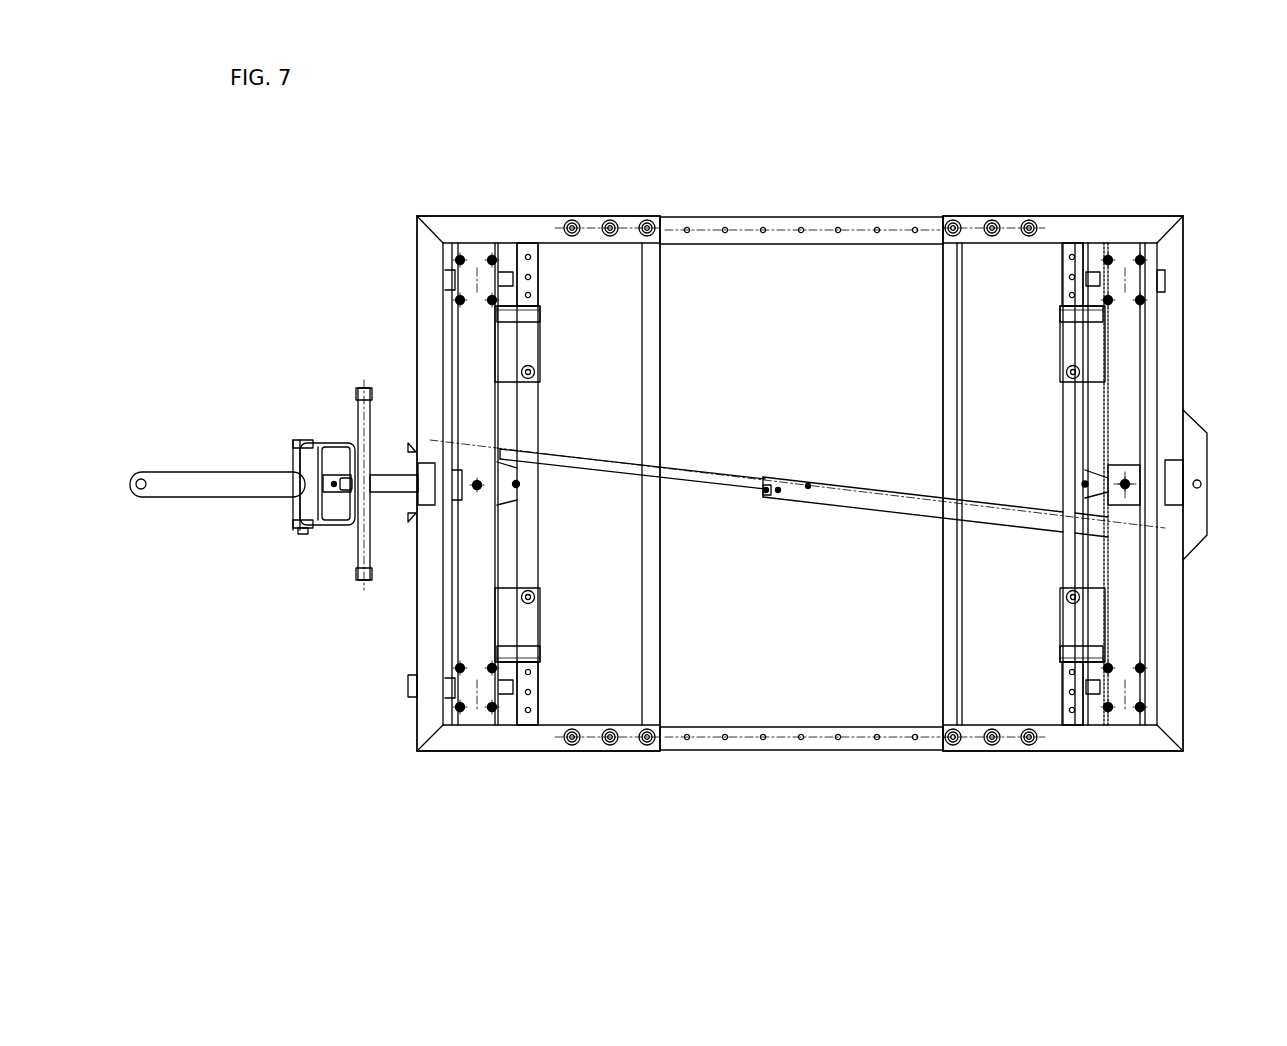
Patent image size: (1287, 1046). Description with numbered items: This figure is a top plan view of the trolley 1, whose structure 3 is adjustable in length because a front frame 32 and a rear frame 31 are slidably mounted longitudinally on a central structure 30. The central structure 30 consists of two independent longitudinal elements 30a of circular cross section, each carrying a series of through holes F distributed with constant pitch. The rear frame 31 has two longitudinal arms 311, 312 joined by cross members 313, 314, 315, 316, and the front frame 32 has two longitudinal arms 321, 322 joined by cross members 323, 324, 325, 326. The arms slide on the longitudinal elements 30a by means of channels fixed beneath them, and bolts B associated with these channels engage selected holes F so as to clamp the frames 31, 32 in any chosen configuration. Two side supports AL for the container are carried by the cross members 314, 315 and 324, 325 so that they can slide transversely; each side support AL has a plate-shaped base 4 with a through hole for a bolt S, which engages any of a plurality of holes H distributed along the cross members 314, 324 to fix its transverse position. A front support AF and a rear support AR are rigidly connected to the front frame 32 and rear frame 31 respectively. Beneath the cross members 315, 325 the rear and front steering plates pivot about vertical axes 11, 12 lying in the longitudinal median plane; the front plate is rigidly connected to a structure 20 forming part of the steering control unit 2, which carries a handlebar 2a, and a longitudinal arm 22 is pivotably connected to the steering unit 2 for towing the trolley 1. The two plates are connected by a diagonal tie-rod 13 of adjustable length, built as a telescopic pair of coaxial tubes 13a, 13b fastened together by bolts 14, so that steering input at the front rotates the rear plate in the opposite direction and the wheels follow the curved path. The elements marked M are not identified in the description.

The trolley 1 is at (958, 178).
The steering control unit 2 is at (248, 444).
The handlebar 2a is at (355, 556).
The structure 3 is at (394, 241).
The base 4 is at (525, 344).
The vertical axis 11 is at (1125, 468).
The vertical axis 12 is at (479, 492).
The diagonal tie-rod 13 is at (710, 482).
The coaxial tube 13a is at (877, 492).
The coaxial tube 13b is at (732, 468).
The bolts 14 is at (772, 494).
The structure 20 is at (392, 497).
The longitudinal arm 22 is at (238, 490).
The central structure 30 is at (737, 216).
The longitudinal elements 30a is at (707, 217).
The rear frame 31 is at (1145, 213).
The front frame 32 is at (438, 214).
The longitudinal arm 311 is at (1083, 228).
The longitudinal arm 312 is at (1085, 738).
The cross member 313 is at (1167, 608).
The cross member 314 is at (1070, 430).
The cross member 315 is at (1125, 625).
The cross member 316 is at (950, 325).
The longitudinal arm 321 is at (476, 228).
The longitudinal arm 322 is at (470, 745).
The cross member 323 is at (428, 300).
The cross member 324 is at (528, 530).
The cross member 325 is at (470, 340).
The cross member 326 is at (650, 412).
The front support AF is at (424, 460).
The side support AL is at (541, 316).
The rear support AR is at (1172, 463).
The bolts B is at (610, 218).
The through holes F is at (801, 228).
The holes H is at (531, 257).
The mounting clip M is at (410, 447).
The bolt S is at (532, 378).